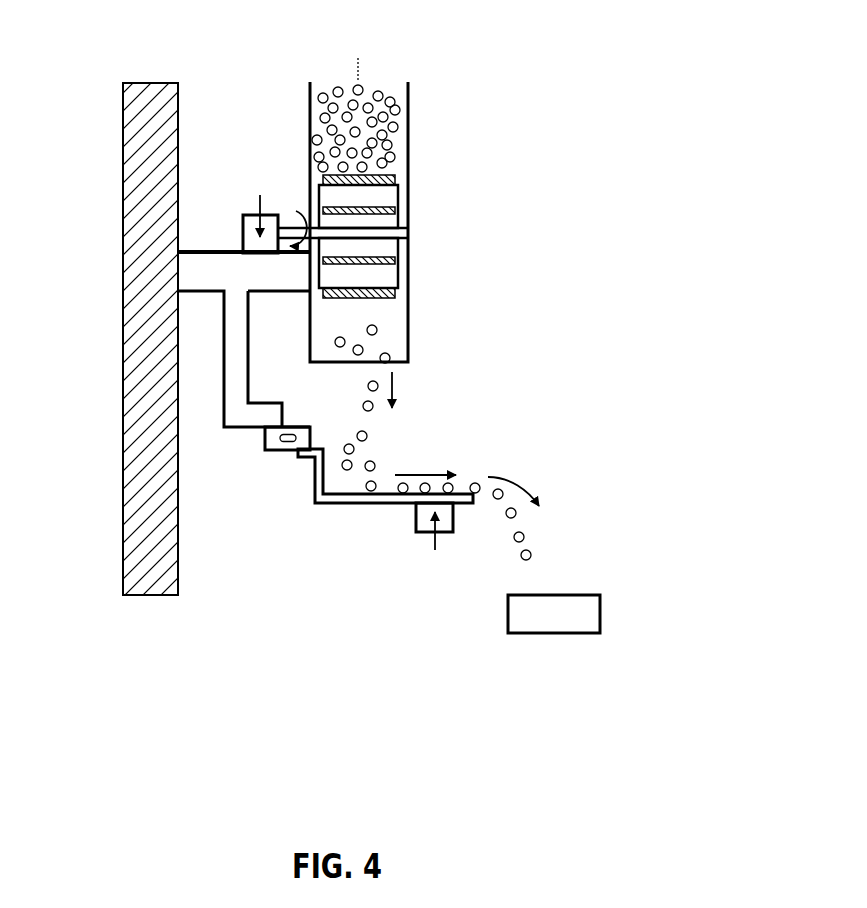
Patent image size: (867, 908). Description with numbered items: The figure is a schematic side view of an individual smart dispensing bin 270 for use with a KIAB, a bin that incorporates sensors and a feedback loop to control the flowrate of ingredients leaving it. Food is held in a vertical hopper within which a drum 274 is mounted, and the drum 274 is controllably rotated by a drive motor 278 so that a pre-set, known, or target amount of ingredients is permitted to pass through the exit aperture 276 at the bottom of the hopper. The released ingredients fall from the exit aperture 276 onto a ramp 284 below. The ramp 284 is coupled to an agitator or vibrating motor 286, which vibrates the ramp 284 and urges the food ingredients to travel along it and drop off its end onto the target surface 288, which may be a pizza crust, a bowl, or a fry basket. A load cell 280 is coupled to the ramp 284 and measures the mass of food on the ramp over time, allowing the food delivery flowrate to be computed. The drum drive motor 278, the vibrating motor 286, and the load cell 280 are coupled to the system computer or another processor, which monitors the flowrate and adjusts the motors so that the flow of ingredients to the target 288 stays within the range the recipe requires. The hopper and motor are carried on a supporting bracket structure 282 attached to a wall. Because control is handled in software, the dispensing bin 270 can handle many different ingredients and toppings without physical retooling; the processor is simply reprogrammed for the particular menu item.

The dispensing bin 270 is at (440, 70).
The drum 274 is at (393, 199).
The exit aperture 276 is at (398, 363).
The drive motor 278 is at (243, 222).
The load cell 280 is at (265, 437).
The support bracket 282 is at (222, 357).
The ramp 284 is at (365, 503).
The vibrating motor 286 is at (435, 579).
The target surface 288 is at (600, 615).